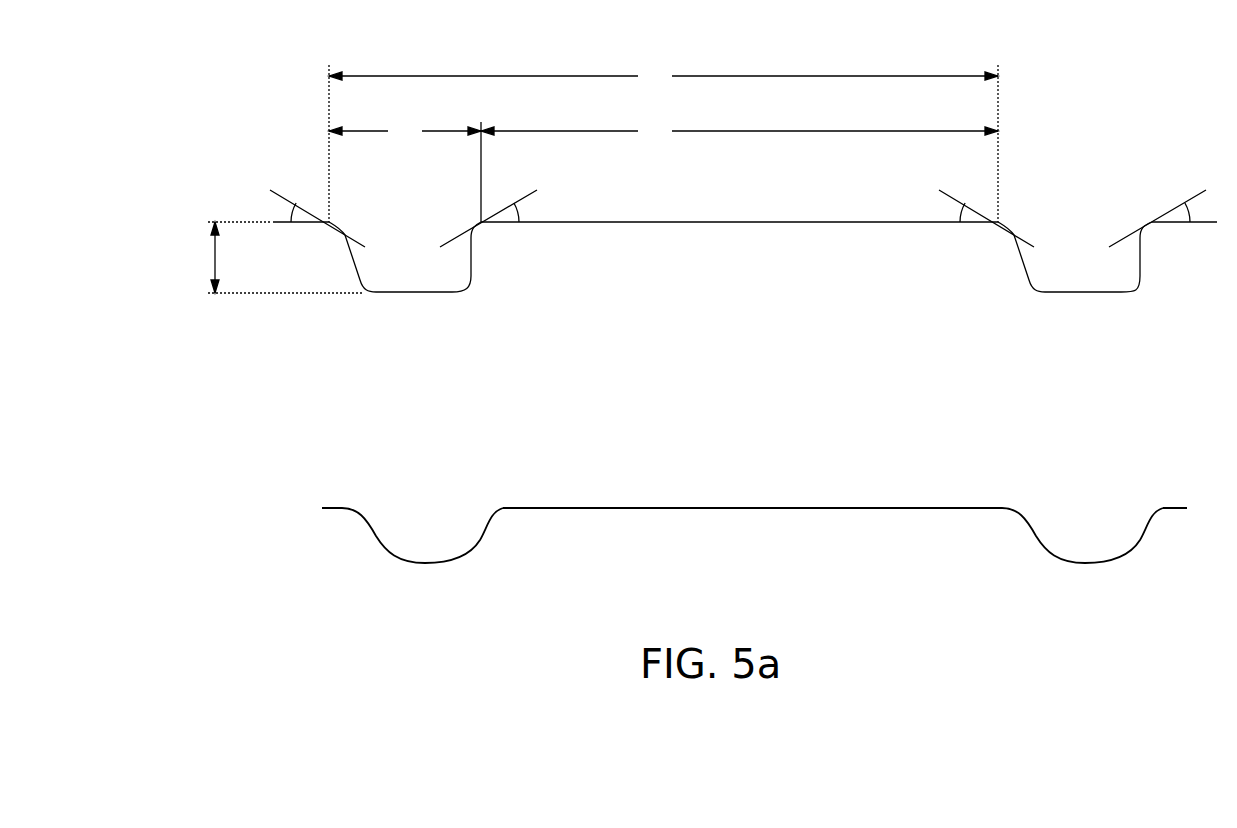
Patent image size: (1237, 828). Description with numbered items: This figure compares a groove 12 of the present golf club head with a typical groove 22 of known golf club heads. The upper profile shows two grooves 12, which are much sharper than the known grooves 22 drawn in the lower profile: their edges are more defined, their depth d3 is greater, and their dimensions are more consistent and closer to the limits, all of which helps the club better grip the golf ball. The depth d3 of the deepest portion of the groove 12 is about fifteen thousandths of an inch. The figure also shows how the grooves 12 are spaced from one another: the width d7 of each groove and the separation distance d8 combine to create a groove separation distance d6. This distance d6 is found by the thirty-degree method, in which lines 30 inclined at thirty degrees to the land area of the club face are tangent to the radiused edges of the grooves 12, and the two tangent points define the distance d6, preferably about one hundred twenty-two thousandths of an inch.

The groove 12 is at (425, 233).
The typical groove of known golf club heads 22 is at (424, 520).
The thirty-degree measurement method line 30 is at (739, 218).
The groove depth d3 is at (272, 257).
The groove separation distance d6 is at (663, 76).
The groove width d7 is at (405, 131).
The separation distance d8 is at (739, 131).